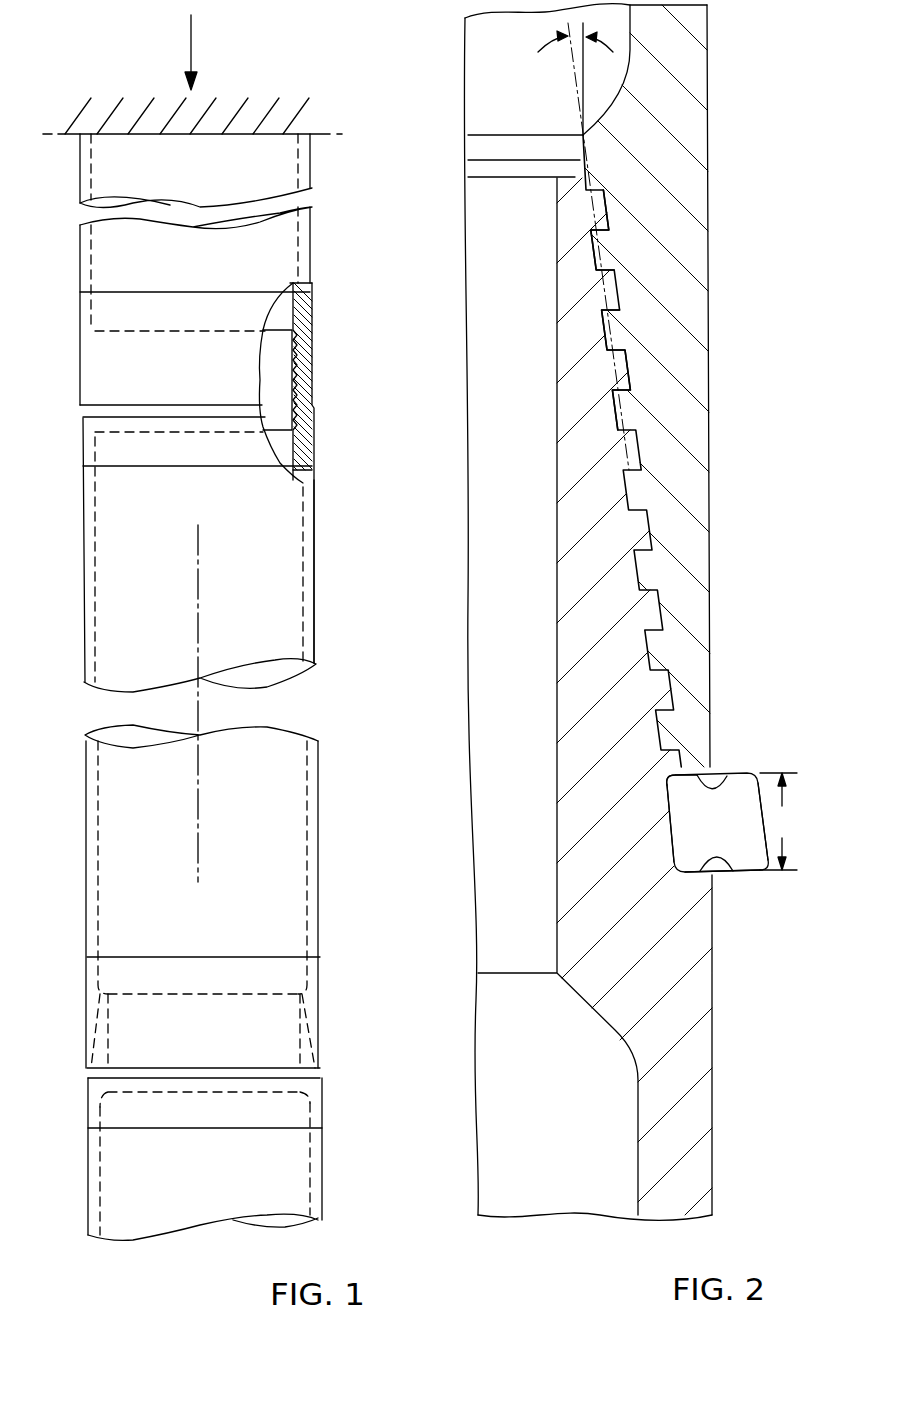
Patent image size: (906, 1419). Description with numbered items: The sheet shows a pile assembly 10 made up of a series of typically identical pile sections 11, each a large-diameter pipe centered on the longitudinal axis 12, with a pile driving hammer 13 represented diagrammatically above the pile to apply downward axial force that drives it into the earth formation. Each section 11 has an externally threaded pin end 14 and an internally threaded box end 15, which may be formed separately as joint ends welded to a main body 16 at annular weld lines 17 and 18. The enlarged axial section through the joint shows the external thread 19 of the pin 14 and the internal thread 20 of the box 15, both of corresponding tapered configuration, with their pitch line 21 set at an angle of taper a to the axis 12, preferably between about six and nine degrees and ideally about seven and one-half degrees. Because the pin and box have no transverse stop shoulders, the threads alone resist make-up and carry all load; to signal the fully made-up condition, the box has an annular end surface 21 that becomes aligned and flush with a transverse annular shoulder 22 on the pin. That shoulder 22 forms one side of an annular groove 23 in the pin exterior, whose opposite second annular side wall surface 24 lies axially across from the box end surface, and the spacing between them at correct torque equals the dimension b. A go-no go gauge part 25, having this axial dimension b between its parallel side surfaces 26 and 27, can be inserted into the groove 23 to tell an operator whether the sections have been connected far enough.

In FIG. 1, the pile assembly 10 is at (350, 278).
In FIG. 1, the pile section 11 is at (316, 529).
In FIG. 1, the longitudinal axis 12 is at (200, 565).
In FIG. 1, the pile driving hammer 13 is at (320, 110).
In FIG. 1, the pin end 14 is at (303, 386).
In FIG. 2, the pin end 14 is at (567, 658).
In FIG. 1, the box end 15 is at (313, 358).
In FIG. 2, the box end 15 is at (687, 362).
In FIG. 1, the main body 16 is at (78, 241).
In FIG. 1, the annular weld line 17 is at (147, 468).
In FIG. 1, the annular weld line 18 is at (180, 291).
In FIG. 2, the external thread 19 is at (625, 500).
In FIG. 2, the internal thread 20 is at (617, 413).
In FIG. 2, the annular end surface 21 is at (607, 258).
In FIG. 2, the transverse annular shoulder 22 is at (680, 785).
In FIG. 2, the annular groove 23 is at (680, 822).
In FIG. 2, the second annular side wall surface 24 is at (723, 870).
In FIG. 2, the go-no go gauge part 25 is at (763, 854).
In FIG. 2, the side surface 26 is at (724, 772).
In FIG. 2, the side surface 27 is at (727, 877).
In FIG. 2, the angle of taper a is at (570, 35).
In FIG. 2, the axial dimension b is at (778, 821).